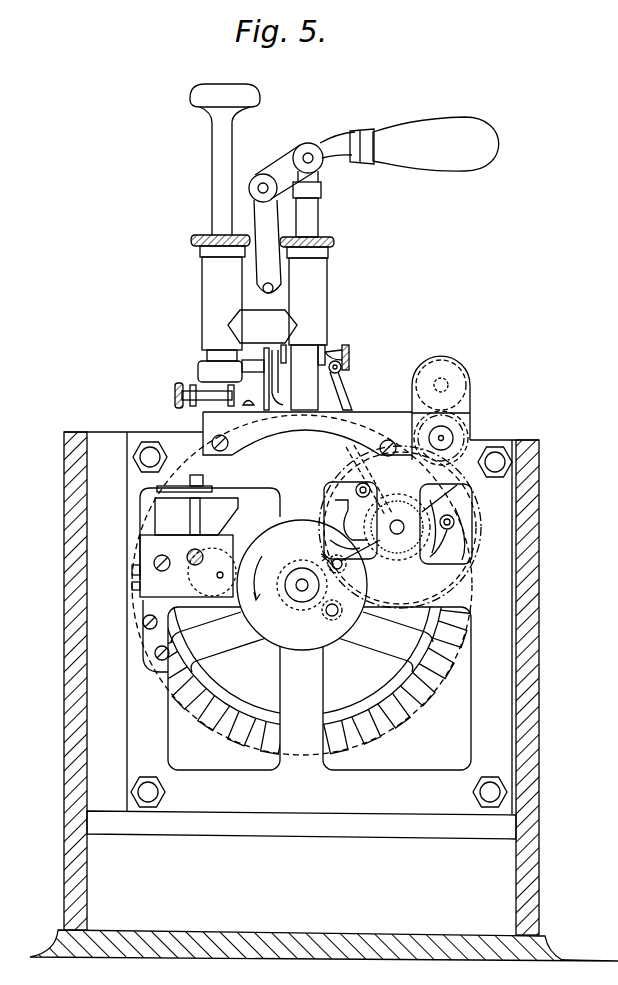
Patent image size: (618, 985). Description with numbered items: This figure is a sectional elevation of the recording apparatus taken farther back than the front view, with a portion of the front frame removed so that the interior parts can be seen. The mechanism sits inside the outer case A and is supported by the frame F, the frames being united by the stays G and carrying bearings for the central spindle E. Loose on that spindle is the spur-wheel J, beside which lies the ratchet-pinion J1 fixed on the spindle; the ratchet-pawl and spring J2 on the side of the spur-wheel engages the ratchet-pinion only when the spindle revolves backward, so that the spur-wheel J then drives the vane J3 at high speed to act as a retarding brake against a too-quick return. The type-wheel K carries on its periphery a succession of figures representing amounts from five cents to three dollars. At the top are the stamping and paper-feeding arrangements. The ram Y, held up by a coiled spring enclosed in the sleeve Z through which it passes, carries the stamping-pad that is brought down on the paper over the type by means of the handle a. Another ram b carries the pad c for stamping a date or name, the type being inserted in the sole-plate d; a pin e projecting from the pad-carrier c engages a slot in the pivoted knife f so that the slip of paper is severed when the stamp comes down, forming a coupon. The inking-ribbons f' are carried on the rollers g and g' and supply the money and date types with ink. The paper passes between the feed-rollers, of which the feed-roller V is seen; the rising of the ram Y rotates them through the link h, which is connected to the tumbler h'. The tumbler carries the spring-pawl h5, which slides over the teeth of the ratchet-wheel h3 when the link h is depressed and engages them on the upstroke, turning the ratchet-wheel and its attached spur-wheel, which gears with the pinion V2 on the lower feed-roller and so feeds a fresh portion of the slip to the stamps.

The handle a is at (396, 145).
The ram b is at (215, 194).
The ram Y is at (320, 226).
The sleeve Z is at (278, 296).
The pad c is at (221, 315).
The pivoted knife f is at (262, 376).
The pin e is at (247, 389).
The inking-ribbon f' is at (234, 387).
The roller g is at (345, 352).
The link h is at (347, 385).
The roller g' is at (164, 394).
The sole-plate d is at (307, 434).
The feed-roller V is at (458, 389).
The pinion V2 is at (464, 432).
The stay G is at (150, 452).
The frame F is at (301, 635).
The outer case A is at (65, 594).
The type-wheel K is at (220, 697).
The spur-wheel J is at (302, 585).
The spindle E is at (303, 592).
The ratchet-pinion J1 is at (285, 598).
The ratchet-pawl and spring J2 is at (340, 610).
The vane J3 is at (206, 536).
The tumbler h' is at (350, 520).
The ratchet-wheel h3 is at (400, 526).
The spring-pawl h5 is at (440, 528).